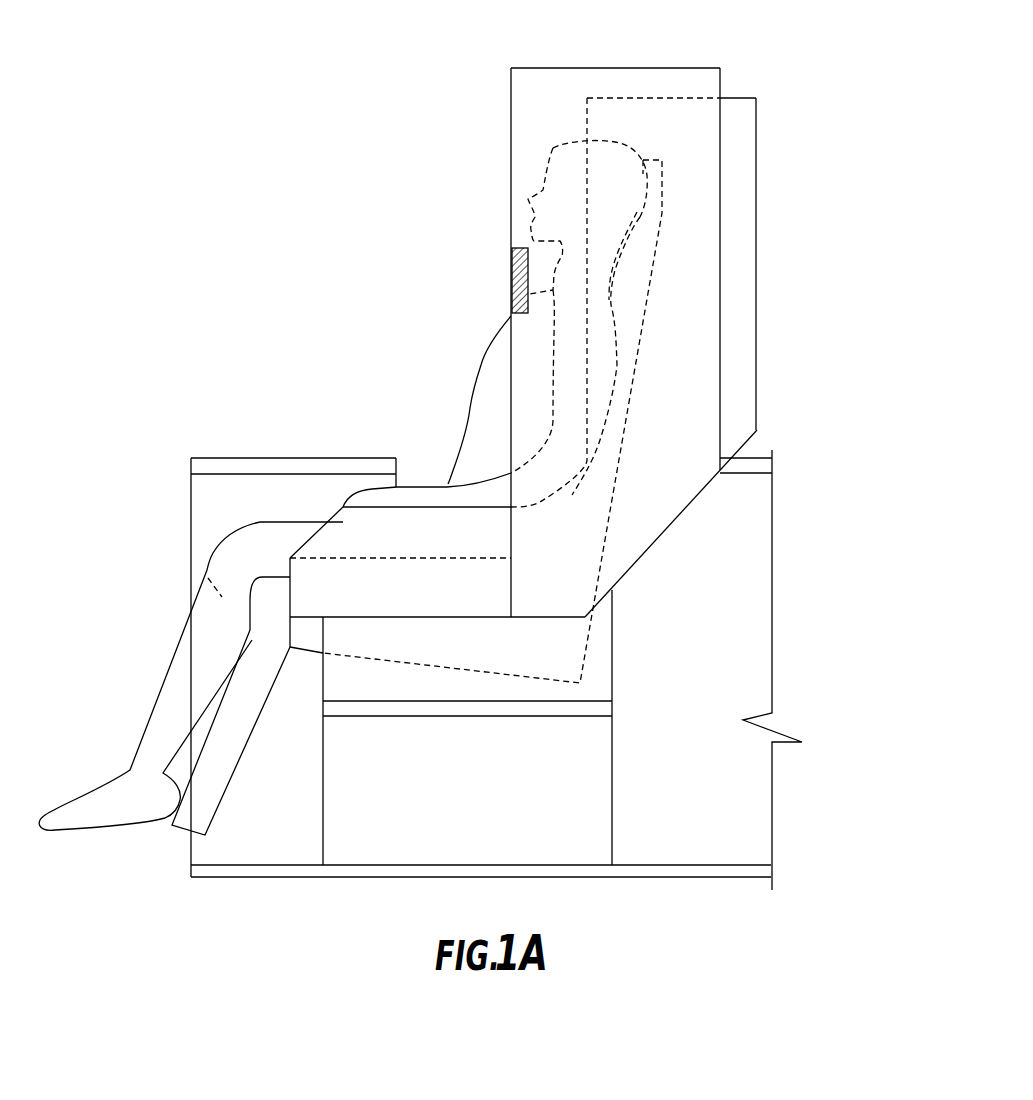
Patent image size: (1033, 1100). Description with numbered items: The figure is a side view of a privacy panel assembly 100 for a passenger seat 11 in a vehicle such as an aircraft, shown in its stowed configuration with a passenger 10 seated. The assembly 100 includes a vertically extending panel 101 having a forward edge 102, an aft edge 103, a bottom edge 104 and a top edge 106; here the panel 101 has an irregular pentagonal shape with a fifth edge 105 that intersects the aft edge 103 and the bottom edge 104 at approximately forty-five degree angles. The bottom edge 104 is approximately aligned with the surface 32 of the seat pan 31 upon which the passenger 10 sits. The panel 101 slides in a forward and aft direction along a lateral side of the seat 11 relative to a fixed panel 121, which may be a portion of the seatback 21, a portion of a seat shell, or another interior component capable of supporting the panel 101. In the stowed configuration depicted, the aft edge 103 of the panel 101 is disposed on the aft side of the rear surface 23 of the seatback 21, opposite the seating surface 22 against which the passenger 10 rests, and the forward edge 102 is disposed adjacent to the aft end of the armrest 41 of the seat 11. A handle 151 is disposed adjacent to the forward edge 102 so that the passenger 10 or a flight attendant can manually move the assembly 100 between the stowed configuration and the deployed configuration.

The privacy panel assembly 100 is at (343, 147).
The vertically extending panel 101 is at (511, 117).
The forward edge 102 is at (511, 228).
The aft edge 103 is at (720, 136).
The fixed panel 121 is at (742, 198).
The top edge 106 is at (590, 68).
The fifth edge 105 is at (688, 506).
The bottom edge 104 is at (565, 618).
The passenger seat 11 is at (403, 795).
The passenger 10 is at (488, 450).
The handle 151 is at (512, 283).
The seatback 21 is at (640, 272).
The seating surface 22 is at (614, 338).
The rear surface 23 is at (641, 337).
The armrest 41 is at (415, 495).
The seat pan 31 is at (258, 618).
The surface 32 is at (282, 575).